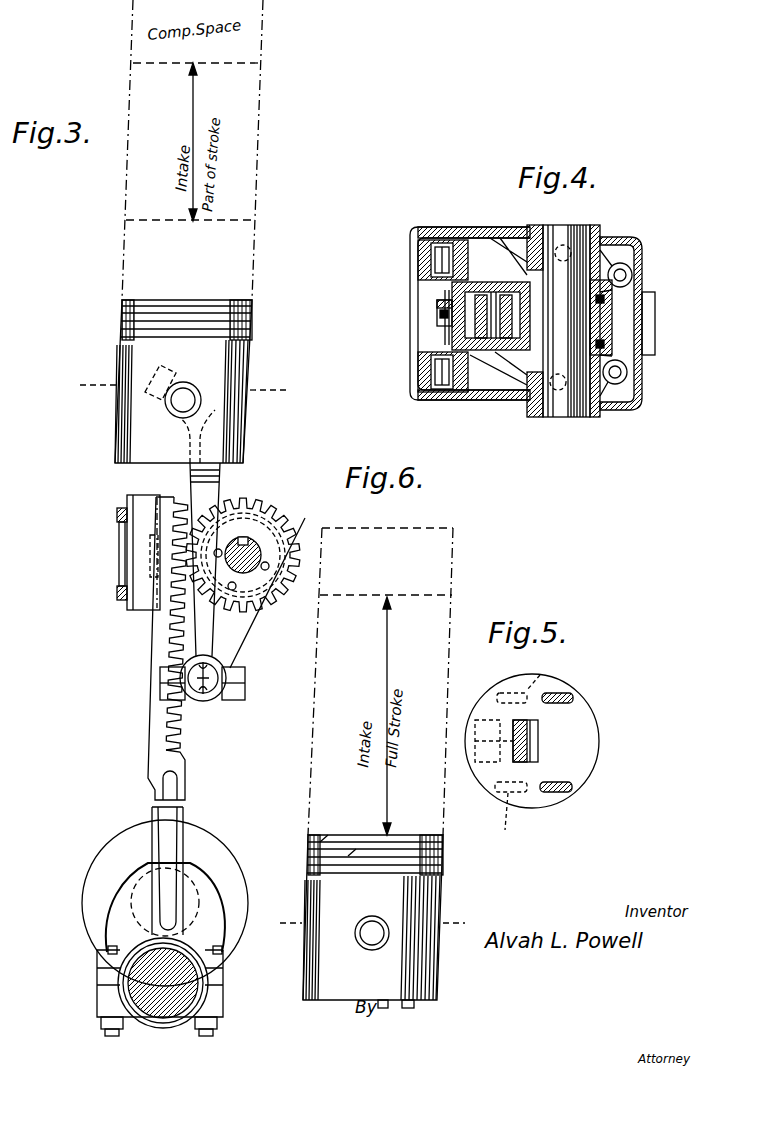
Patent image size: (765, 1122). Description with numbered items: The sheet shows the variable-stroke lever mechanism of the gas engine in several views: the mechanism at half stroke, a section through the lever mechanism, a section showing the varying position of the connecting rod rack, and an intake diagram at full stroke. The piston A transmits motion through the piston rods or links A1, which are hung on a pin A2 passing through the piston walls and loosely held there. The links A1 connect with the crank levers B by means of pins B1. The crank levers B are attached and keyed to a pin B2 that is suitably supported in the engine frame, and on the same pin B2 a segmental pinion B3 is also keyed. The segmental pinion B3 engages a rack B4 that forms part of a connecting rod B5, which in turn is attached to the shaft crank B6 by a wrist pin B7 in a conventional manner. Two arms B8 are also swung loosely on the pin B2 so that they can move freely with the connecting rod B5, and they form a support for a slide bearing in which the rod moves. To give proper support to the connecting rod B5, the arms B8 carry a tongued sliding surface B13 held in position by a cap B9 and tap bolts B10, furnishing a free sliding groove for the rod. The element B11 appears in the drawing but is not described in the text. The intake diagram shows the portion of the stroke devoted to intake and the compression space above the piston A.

In FIG. 3, the piston A is at (120, 352).
In FIG. 6, the piston A is at (312, 890).
In FIG. 3, the piston rod A1 is at (222, 482).
In FIG. 4, the piston rod A1 is at (430, 260).
In FIG. 6, the piston rod A1 is at (410, 1006).
In FIG. 5, the piston rod A1 is at (558, 694).
In FIG. 3, the pin A2 is at (186, 382).
In FIG. 6, the pin A2 is at (366, 947).
In FIG. 3, the crank lever B is at (242, 640).
In FIG. 4, the crank lever B is at (418, 282).
In FIG. 3, the pin B1 is at (215, 697).
In FIG. 4, the pin B1 is at (436, 240).
In FIG. 3, the pin B2 is at (250, 551).
In FIG. 4, the pin B2 is at (578, 417).
In FIG. 3, the segmental pinion B3 is at (262, 606).
In FIG. 4, the segmental pinion B3 is at (655, 313).
In FIG. 3, the rack B4 is at (160, 650).
In FIG. 4, the rack B4 is at (504, 400).
In FIG. 3, the connecting rod B5 is at (185, 815).
In FIG. 5, the connecting rod B5 is at (538, 741).
In FIG. 3, the shaft crank B6 is at (112, 915).
In FIG. 3, the wrist pin B7 is at (195, 988).
In FIG. 3, the arm B8 is at (148, 605).
In FIG. 4, the arm B8 is at (481, 282).
In FIG. 3, the cap B9 is at (126, 606).
In FIG. 4, the cap B9 is at (443, 326).
In FIG. 3, the tap bolt B10 is at (117, 512).
In FIG. 4, the tap bolt B10 is at (438, 304).
In FIG. 3, the plate B11 is at (119, 548).
In FIG. 4, the plate B11 is at (440, 314).
In FIG. 4, the tongued sliding surface B13 is at (440, 320).